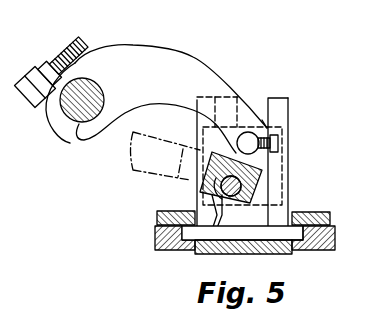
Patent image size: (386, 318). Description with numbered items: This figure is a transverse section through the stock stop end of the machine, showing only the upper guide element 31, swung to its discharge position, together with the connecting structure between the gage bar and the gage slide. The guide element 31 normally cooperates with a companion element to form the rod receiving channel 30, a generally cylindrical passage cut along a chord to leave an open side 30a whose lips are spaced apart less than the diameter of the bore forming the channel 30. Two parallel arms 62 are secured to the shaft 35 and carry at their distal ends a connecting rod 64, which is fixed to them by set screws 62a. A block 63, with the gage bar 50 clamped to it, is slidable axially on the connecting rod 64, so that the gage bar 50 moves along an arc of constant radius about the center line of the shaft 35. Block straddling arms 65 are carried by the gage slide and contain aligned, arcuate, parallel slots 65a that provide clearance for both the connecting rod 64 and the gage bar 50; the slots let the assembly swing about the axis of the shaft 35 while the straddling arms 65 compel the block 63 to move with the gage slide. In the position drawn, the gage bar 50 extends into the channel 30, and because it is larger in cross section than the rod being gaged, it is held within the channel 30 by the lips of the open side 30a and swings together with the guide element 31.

The rod receiving channel 30 is at (204, 178).
The open side 30a is at (245, 232).
The guide element 31 is at (244, 192).
The shaft 35 is at (77, 143).
The gage bar 50 is at (258, 186).
The arms 62 is at (184, 58).
The set screws 62a is at (282, 146).
The block 63 is at (286, 166).
The connecting rod 64 is at (256, 138).
The block straddling arms 65 is at (280, 104).
The arcuate slots 65a is at (266, 128).